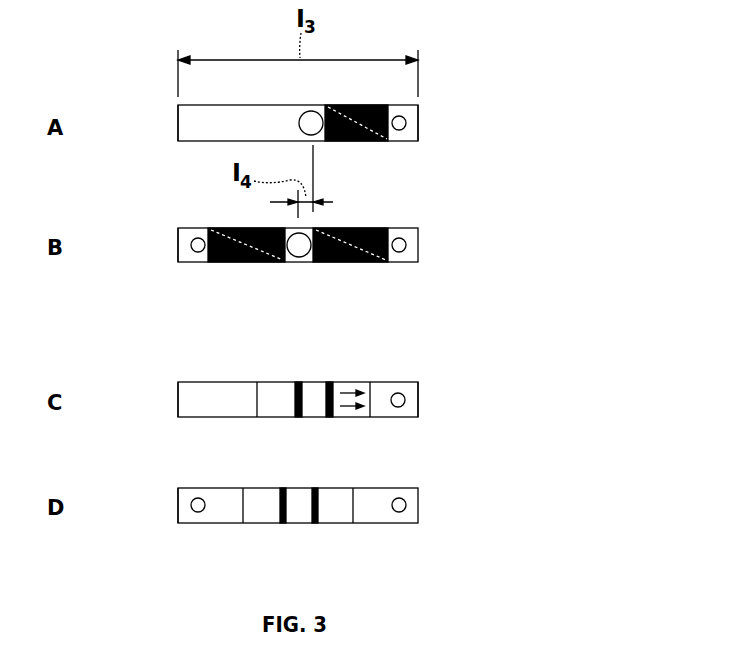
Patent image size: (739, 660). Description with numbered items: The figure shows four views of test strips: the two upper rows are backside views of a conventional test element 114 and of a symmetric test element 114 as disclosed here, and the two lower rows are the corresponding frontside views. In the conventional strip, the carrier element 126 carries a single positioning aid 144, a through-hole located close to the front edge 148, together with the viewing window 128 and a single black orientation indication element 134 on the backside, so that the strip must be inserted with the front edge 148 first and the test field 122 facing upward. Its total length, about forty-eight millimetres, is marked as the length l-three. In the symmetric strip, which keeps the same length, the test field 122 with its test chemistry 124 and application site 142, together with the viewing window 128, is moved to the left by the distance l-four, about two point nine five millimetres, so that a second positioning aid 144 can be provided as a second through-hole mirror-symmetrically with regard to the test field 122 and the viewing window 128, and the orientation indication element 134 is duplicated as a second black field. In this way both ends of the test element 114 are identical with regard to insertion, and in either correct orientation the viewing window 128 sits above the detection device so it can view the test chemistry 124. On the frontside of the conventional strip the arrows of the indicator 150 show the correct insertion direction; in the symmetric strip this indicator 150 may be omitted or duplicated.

The test element 114 is at (424, 124).
The carrier element 126 is at (177, 128).
The front edge 148 is at (420, 106).
The viewing window 128 is at (302, 113).
The orientation indication element 134 is at (360, 142).
The positioning aid 144 is at (399, 131).
The indicator 150 is at (349, 388).
The test field 122 is at (303, 478).
The test chemistry 124 is at (320, 478).
The application site 142 is at (312, 410).